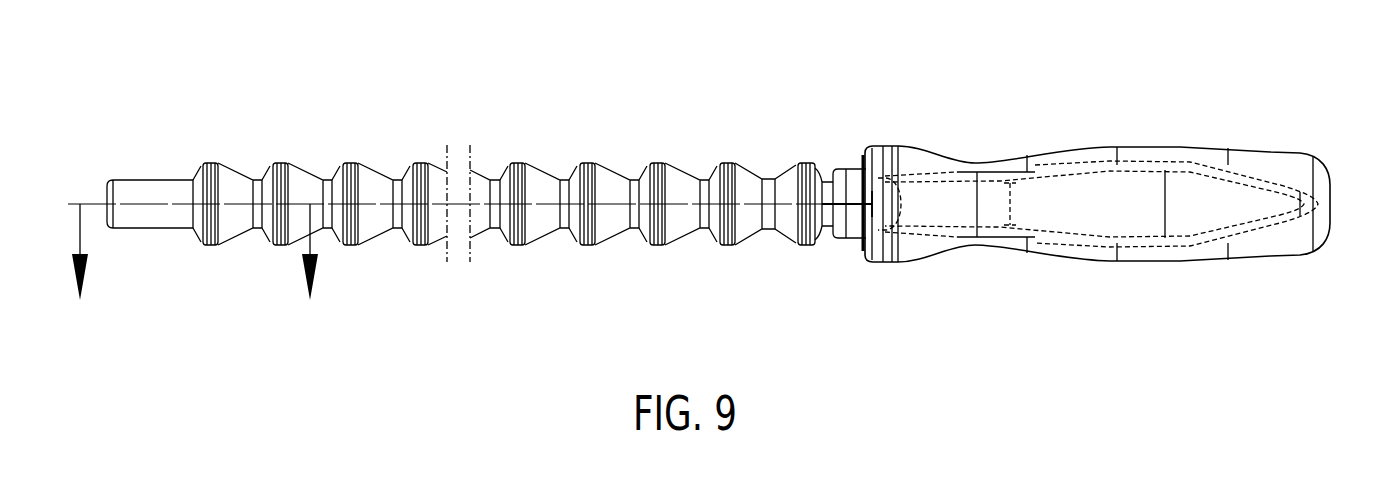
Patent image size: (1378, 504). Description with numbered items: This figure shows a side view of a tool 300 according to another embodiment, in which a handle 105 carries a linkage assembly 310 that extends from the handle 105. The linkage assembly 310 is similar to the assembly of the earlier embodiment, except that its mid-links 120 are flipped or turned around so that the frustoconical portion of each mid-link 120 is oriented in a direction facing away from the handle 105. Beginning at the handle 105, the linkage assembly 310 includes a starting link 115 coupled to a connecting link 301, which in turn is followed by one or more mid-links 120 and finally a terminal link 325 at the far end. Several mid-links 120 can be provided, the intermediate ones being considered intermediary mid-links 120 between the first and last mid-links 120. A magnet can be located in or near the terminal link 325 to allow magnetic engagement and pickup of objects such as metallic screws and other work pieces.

The tool 300 is at (405, 89).
The terminal link 325 is at (152, 178).
The linkage assembly 310 is at (532, 246).
The mid-link 120 is at (600, 163).
The connecting link 301 is at (755, 168).
The starting link 115 is at (850, 167).
The handle 105 is at (1095, 150).